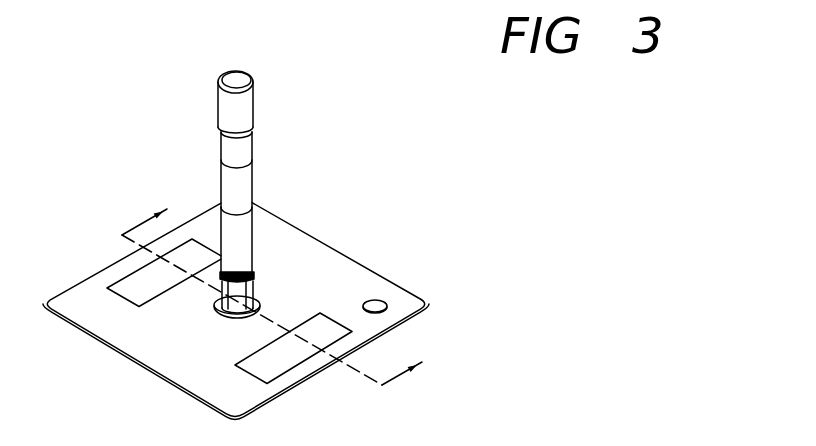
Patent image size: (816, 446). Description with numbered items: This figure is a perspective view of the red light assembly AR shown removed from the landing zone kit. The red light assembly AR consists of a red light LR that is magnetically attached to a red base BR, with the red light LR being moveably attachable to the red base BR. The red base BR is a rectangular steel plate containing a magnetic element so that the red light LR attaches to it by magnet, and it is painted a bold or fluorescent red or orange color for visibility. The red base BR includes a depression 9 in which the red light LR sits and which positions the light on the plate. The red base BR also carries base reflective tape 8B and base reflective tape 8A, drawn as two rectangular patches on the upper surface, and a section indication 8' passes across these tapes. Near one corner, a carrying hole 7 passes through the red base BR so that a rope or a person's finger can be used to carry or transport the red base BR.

The red light assembly AR is at (147, 103).
The red light LR is at (241, 153).
The red base BR is at (324, 258).
The carrying hole 7 is at (378, 305).
The base reflective tape 8A is at (315, 349).
The base reflective tape 8B is at (152, 275).
The section line 8' is at (286, 283).
The depression 9 is at (216, 304).